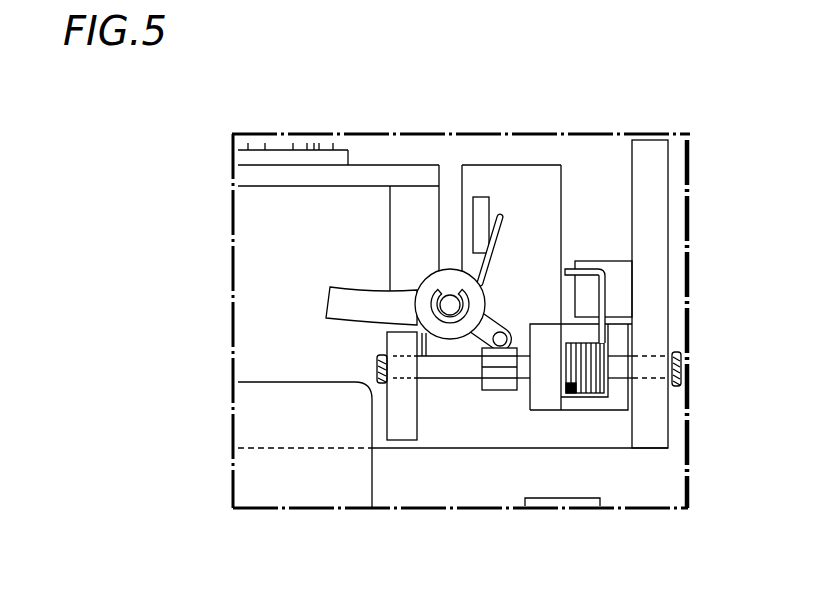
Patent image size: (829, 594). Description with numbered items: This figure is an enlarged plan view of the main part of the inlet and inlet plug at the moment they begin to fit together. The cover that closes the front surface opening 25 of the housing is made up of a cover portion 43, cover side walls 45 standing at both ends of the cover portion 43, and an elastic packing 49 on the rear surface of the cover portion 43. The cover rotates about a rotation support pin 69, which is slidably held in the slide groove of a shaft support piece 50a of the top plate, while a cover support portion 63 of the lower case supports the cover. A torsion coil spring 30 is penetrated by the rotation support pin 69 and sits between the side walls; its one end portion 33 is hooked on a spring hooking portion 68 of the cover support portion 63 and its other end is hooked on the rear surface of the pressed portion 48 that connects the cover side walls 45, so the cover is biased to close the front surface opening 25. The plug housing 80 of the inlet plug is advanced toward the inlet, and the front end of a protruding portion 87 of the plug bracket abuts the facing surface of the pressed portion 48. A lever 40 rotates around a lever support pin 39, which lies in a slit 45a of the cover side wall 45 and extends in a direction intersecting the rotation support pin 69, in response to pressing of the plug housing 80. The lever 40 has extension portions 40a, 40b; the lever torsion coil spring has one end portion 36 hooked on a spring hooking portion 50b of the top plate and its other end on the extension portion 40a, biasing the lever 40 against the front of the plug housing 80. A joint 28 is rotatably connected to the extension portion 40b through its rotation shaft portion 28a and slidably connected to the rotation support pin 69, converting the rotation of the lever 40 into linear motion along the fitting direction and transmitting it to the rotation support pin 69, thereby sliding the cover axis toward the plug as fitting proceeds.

The front surface opening 25 is at (279, 145).
The elastic packing 49 is at (340, 157).
The cover portion 43 is at (381, 176).
The slit 45a is at (444, 197).
The cover side wall 45 is at (518, 187).
The spring hooking portion 50b is at (483, 207).
The cover support portion 63 is at (651, 156).
The spring hooking portion 68 is at (618, 302).
The plug housing 80 is at (328, 475).
The pressed portion 48 is at (547, 400).
The torsion coil spring 30 is at (587, 343).
The one end portion 33 is at (586, 263).
The joint 28 is at (498, 380).
The rotation support pin 69 is at (683, 366).
The lever 40 is at (357, 298).
The extension portion 40a is at (364, 307).
The extension portion 40b is at (489, 321).
The one end portion 36 is at (500, 238).
The lever support pin 39 is at (451, 308).
The rotation shaft portion 28a is at (509, 357).
The shaft support piece 50a is at (400, 427).
The protruding portion 87 is at (583, 500).